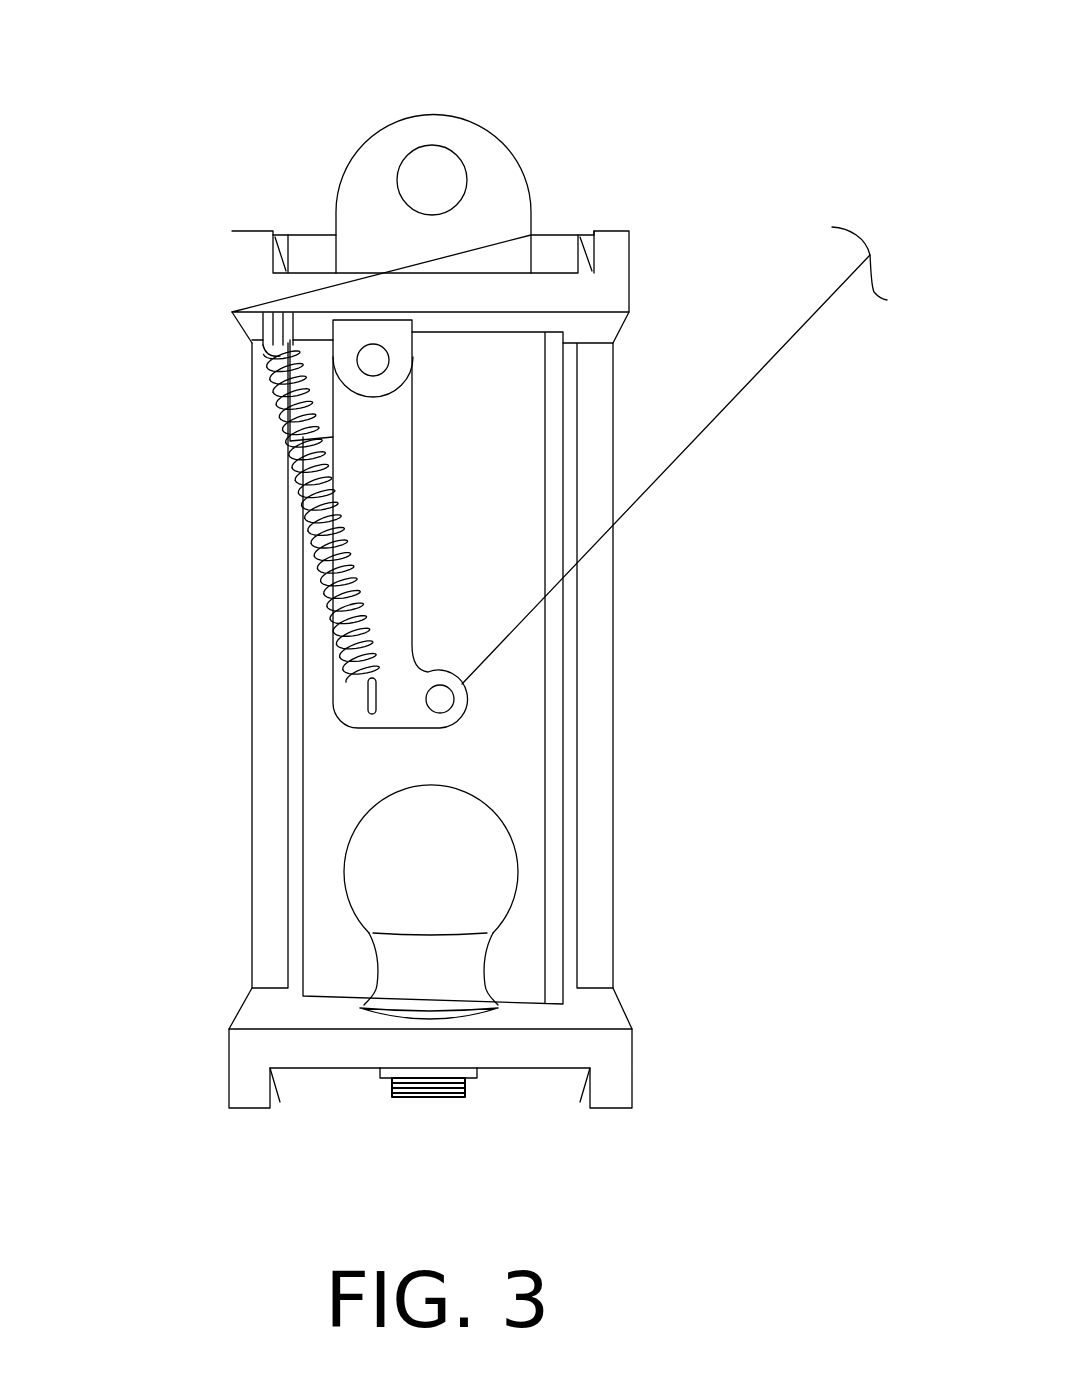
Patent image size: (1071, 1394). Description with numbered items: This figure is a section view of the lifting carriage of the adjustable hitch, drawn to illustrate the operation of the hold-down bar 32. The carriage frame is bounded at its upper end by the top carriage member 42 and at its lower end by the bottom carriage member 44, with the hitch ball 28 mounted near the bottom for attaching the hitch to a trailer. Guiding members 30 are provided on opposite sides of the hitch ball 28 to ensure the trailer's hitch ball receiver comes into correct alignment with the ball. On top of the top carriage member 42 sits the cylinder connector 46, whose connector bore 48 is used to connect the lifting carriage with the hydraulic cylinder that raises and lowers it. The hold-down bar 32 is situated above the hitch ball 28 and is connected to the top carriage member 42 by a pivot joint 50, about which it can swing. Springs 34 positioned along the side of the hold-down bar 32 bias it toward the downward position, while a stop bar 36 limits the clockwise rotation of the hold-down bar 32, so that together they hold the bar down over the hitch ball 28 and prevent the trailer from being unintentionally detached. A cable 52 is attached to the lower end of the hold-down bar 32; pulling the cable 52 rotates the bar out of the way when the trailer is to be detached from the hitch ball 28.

The hitch ball 28 is at (452, 980).
The guiding members 30 is at (327, 792).
The hold-down bar 32 is at (380, 523).
The springs 34 is at (320, 565).
The stop bar 36 is at (320, 370).
The top carriage member 42 is at (614, 291).
The bottom carriage member 44 is at (248, 1063).
The cylinder connector 46 is at (368, 175).
The connector bore 48 is at (440, 182).
The pivot joint 50 is at (374, 358).
The cable 52 is at (662, 477).